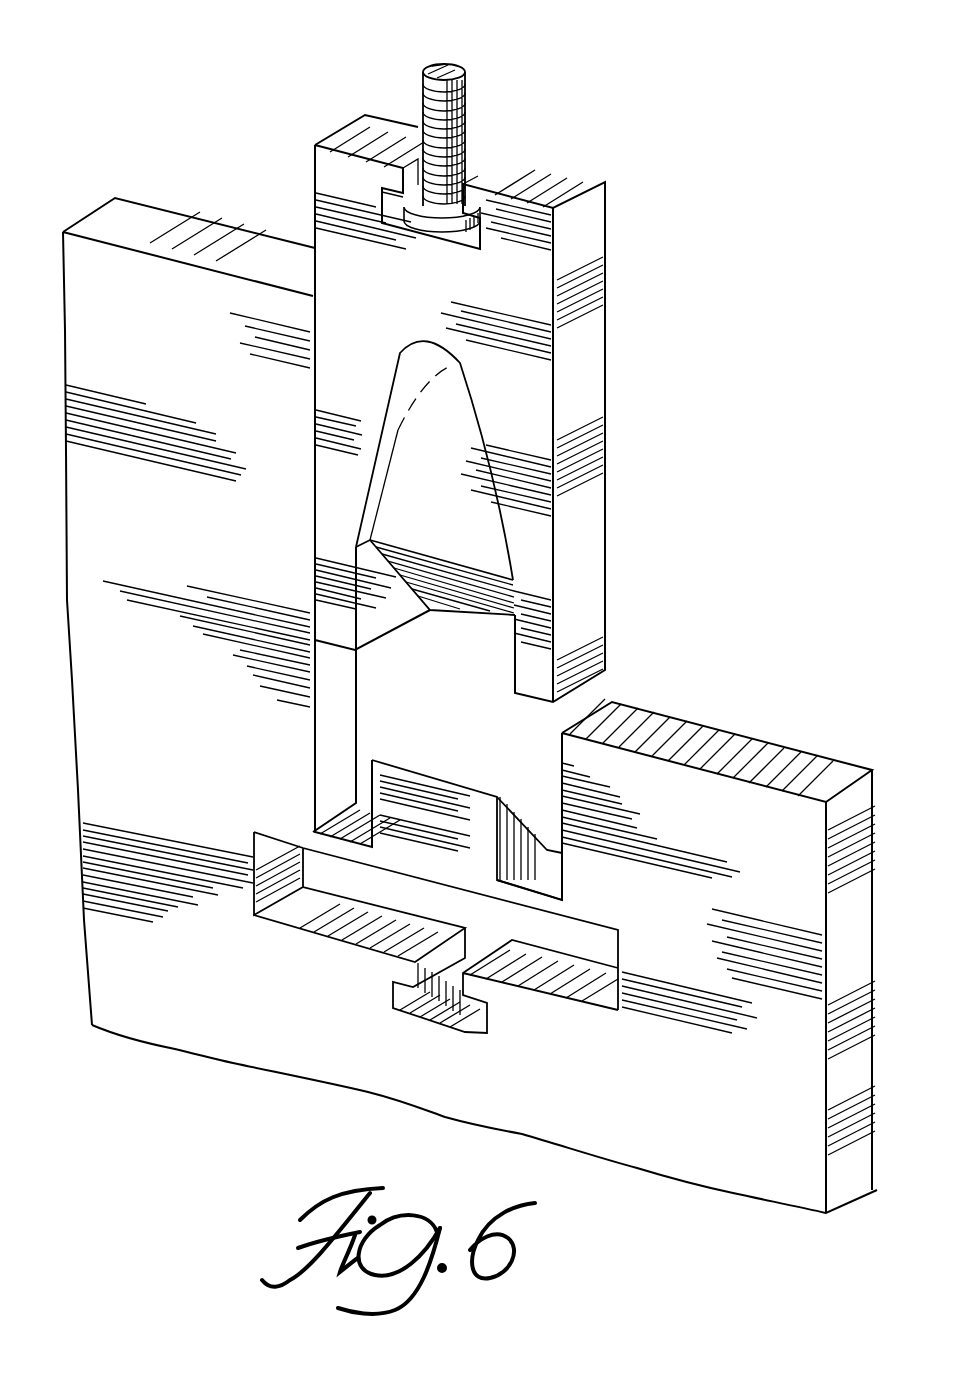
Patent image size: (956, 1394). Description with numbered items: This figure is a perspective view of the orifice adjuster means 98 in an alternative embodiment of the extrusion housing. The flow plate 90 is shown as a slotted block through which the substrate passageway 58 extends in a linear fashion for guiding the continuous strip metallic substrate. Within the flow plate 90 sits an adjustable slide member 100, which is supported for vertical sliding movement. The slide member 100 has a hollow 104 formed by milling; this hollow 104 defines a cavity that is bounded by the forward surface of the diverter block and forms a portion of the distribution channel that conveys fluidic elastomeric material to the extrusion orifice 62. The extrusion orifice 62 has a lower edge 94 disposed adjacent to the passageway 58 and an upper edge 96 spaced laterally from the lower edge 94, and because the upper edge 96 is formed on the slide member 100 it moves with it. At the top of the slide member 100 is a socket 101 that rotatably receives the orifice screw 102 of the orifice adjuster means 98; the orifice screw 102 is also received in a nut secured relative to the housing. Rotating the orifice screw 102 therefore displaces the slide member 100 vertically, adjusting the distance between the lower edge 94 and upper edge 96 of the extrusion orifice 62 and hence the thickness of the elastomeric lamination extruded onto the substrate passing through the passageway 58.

The substrate passageway 58 is at (395, 918).
The extrusion orifice 62 is at (433, 612).
The flow plate 90 is at (118, 215).
The lower edge 94 is at (545, 850).
The upper edge 96 is at (483, 622).
The orifice adjuster means 98 is at (479, 64).
The slide member 100 is at (600, 231).
The socket 101 is at (482, 236).
The orifice screw 102 is at (432, 100).
The hollow 104 is at (425, 365).